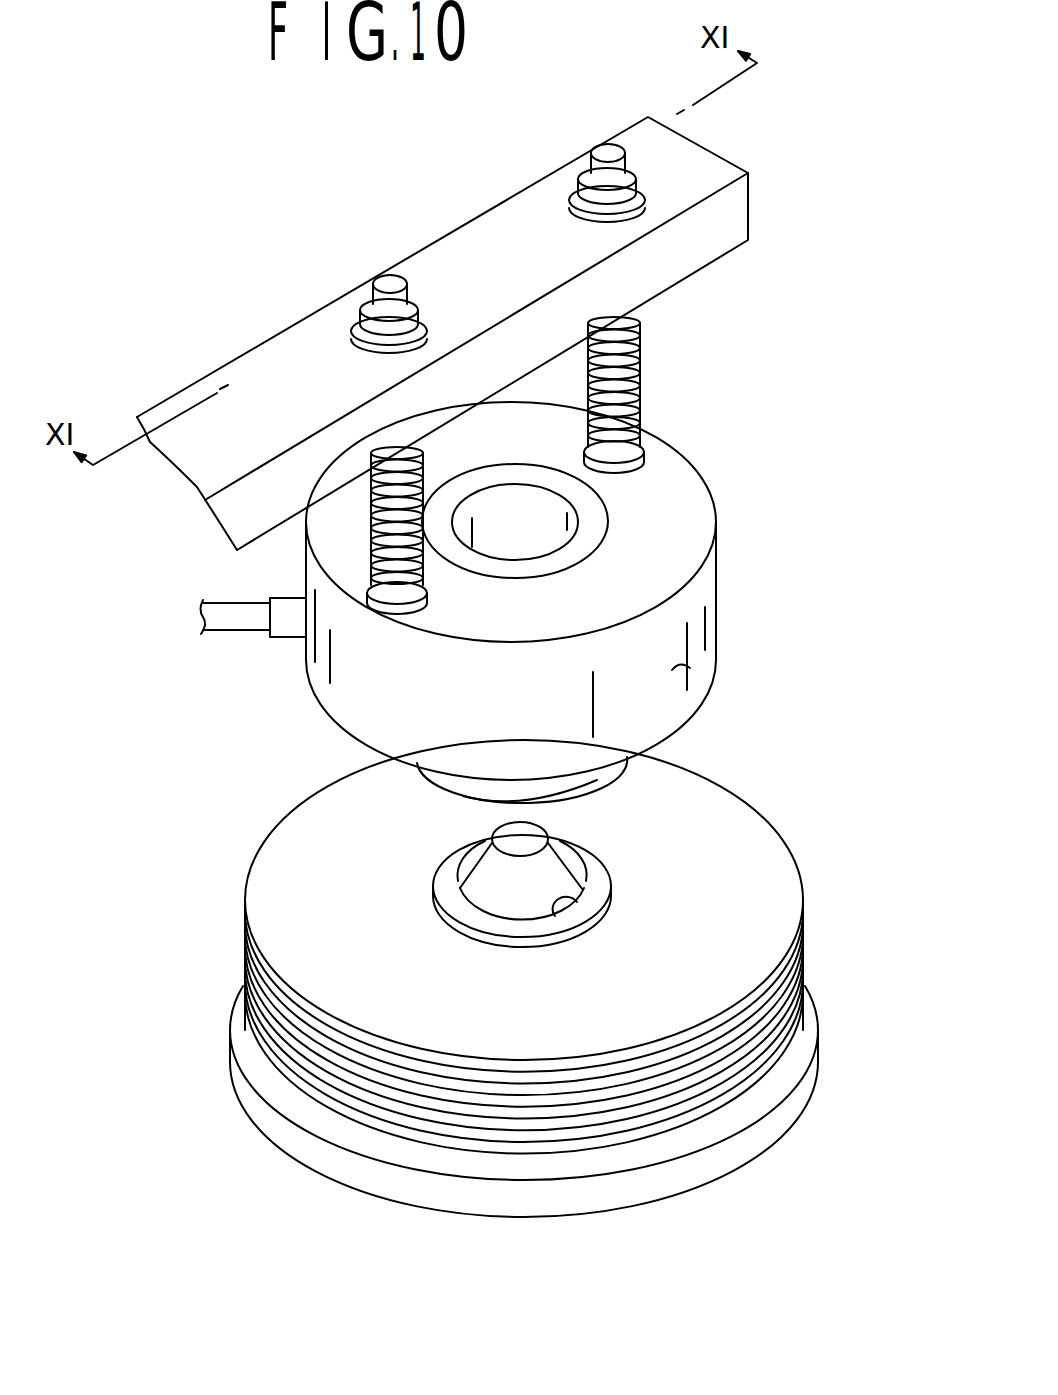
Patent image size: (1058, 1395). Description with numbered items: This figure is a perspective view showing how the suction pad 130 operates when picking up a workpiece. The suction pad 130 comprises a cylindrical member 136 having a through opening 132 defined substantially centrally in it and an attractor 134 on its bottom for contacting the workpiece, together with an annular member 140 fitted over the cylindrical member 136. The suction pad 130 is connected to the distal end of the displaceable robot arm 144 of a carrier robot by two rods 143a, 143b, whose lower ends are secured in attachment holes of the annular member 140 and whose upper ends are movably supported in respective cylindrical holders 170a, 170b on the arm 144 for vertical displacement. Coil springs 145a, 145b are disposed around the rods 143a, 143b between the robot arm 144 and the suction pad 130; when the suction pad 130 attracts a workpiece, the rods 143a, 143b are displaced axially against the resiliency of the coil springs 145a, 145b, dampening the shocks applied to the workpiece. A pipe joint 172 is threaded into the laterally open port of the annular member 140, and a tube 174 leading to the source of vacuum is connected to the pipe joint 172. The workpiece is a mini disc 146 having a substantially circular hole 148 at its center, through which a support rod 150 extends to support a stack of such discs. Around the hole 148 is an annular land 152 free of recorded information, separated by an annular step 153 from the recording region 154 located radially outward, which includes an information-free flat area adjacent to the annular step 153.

The suction pad 130 is at (735, 507).
The through opening 132 is at (545, 540).
The attractor 134 is at (473, 798).
The cylindrical member 136 is at (603, 772).
The annular member 140 is at (672, 670).
The rod 143a is at (408, 590).
The rod 143b is at (622, 402).
The robot arm 144 is at (732, 215).
The coil spring 145a is at (395, 470).
The coil spring 145b is at (641, 348).
The mini disc 146 is at (808, 892).
The circular hole 148 is at (577, 900).
The support rod 150 is at (557, 868).
The annular land 152 is at (450, 892).
The annular step 153 is at (483, 938).
The recording region 154 is at (488, 1033).
The cylindrical holder 170a is at (415, 300).
The cylindrical holder 170b is at (617, 193).
The pipe joint 172 is at (287, 638).
The tube 174 is at (233, 630).